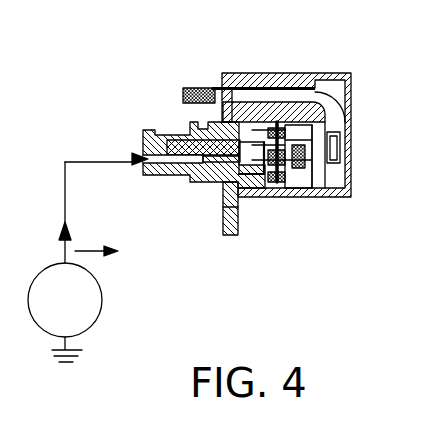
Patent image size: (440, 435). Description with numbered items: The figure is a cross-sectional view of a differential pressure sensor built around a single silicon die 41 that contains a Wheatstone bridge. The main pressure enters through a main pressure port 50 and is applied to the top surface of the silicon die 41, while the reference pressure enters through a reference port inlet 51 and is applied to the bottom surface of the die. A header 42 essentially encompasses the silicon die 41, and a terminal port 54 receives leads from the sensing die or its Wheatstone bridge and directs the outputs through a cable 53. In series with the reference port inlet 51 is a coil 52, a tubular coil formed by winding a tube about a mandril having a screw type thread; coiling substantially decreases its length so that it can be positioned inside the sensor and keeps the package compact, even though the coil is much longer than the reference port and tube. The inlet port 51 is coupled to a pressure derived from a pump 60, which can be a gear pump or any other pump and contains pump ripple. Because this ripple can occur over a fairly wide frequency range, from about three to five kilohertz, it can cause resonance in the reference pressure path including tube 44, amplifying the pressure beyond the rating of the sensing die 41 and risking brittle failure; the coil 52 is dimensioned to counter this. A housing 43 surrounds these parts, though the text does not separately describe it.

The silicon die 41 is at (250, 140).
The header 42 is at (278, 102).
The housing 43 is at (341, 73).
The tube 44 is at (295, 140).
The main pressure port 50 is at (163, 130).
The reference port inlet 51 is at (146, 170).
The coil 52 is at (281, 152).
The cable 53 is at (196, 88).
The terminal port 54 is at (303, 167).
The pump 60 is at (98, 281).